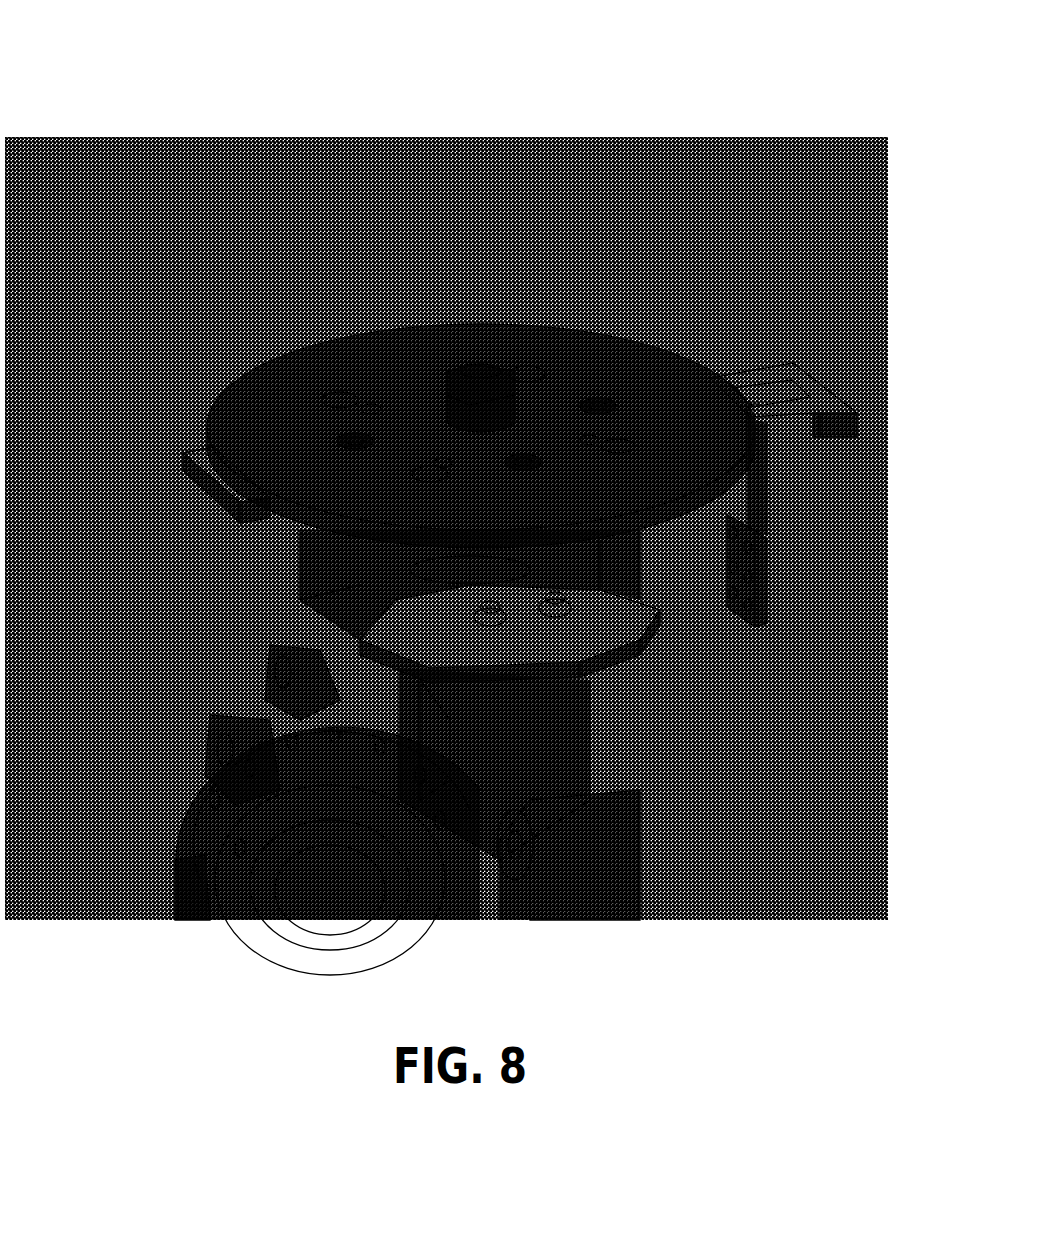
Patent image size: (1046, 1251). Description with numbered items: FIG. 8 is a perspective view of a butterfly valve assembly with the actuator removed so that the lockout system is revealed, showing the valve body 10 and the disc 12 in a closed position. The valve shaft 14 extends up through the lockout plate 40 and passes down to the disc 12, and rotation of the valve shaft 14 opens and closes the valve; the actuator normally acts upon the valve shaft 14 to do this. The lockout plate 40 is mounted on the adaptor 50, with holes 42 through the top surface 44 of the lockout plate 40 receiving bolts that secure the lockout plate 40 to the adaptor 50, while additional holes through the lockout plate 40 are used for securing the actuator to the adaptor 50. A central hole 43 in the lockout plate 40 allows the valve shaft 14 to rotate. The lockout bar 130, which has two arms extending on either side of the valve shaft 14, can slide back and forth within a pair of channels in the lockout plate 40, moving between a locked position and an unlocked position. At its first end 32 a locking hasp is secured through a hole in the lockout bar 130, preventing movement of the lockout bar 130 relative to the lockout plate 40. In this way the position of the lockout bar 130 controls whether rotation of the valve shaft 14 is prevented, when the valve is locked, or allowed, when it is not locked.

The valve body 10 is at (612, 858).
The disc 12 is at (348, 905).
The valve shaft 14 is at (478, 372).
The first end 32 is at (740, 622).
The lockout plate 40 is at (668, 370).
The holes 42 is at (582, 398).
The central hole 43 is at (340, 398).
The top surface 44 is at (248, 412).
The adaptor 50 is at (618, 643).
The lockout bar 130 is at (780, 378).